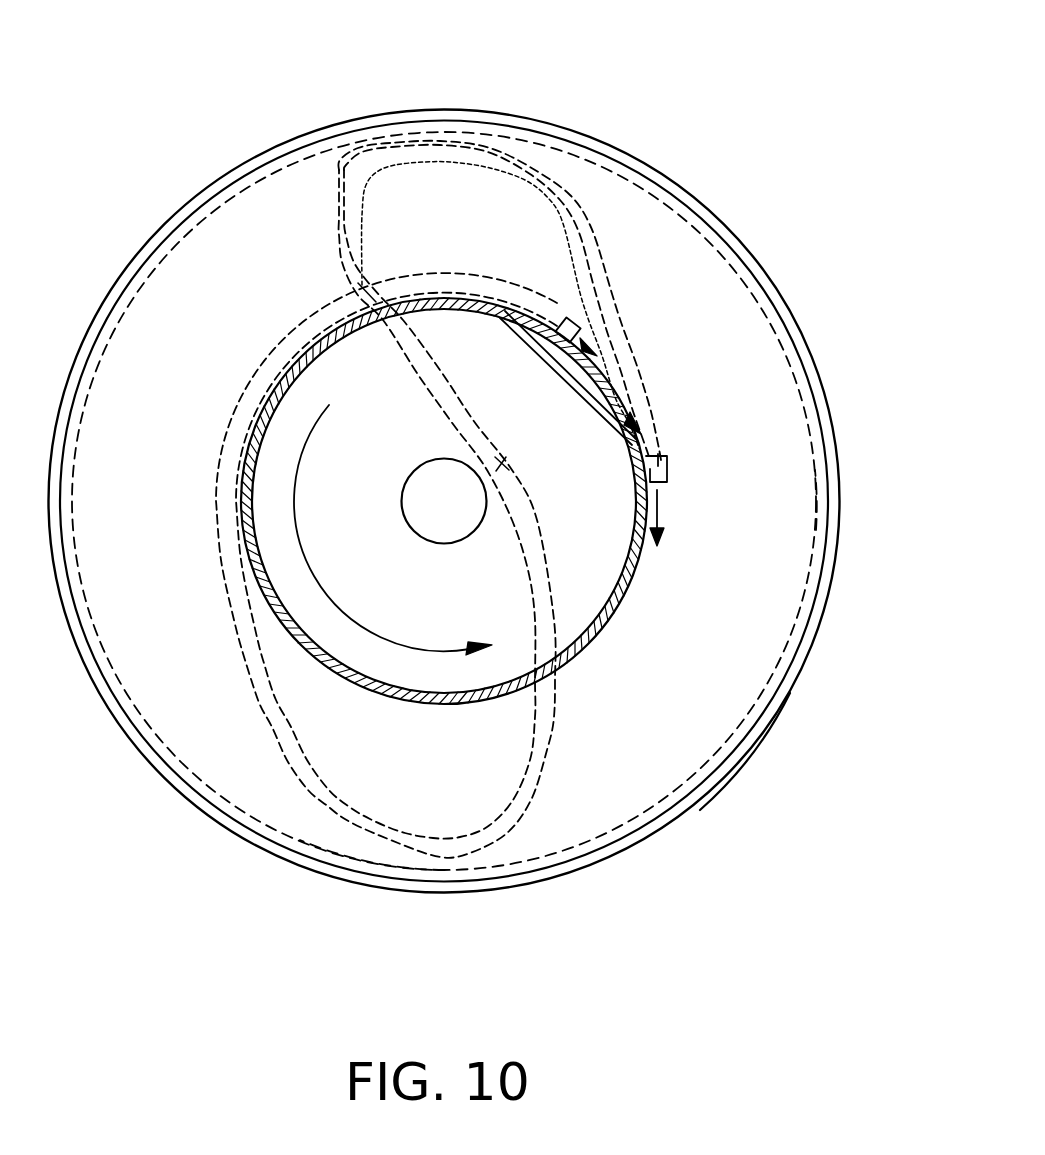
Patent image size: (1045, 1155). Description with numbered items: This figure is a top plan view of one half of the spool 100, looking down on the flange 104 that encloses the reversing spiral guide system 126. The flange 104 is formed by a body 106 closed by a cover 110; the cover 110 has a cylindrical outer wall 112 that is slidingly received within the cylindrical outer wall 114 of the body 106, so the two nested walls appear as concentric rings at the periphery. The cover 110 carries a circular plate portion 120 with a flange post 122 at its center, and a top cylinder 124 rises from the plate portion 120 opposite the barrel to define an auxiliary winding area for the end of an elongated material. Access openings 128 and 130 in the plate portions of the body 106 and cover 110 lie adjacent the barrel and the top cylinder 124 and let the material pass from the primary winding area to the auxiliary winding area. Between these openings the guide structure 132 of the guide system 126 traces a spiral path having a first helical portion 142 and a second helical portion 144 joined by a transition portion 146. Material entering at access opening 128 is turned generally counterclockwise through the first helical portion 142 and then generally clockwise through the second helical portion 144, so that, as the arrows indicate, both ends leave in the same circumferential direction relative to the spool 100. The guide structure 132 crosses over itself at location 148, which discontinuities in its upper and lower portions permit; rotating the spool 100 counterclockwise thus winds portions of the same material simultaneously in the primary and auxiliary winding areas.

The spool 100 is at (500, 518).
The flange 104 is at (762, 266).
The body 106 is at (203, 188).
The cover 110 is at (675, 747).
The cylindrical outer wall 112 is at (795, 373).
The cylindrical outer wall 114 is at (788, 693).
The circular plate portion 120 is at (780, 513).
The flange post 122 is at (460, 542).
The top cylinder 124 is at (608, 620).
The reversing spiral guide system 126 is at (197, 573).
The access opening 128 is at (669, 470).
The access opening 130 is at (572, 320).
The guide structure 132 is at (563, 206).
The first helical portion 142 is at (416, 138).
The second helical portion 144 is at (405, 843).
The transition portion 146 is at (500, 466).
The crossing location 148 is at (372, 296).